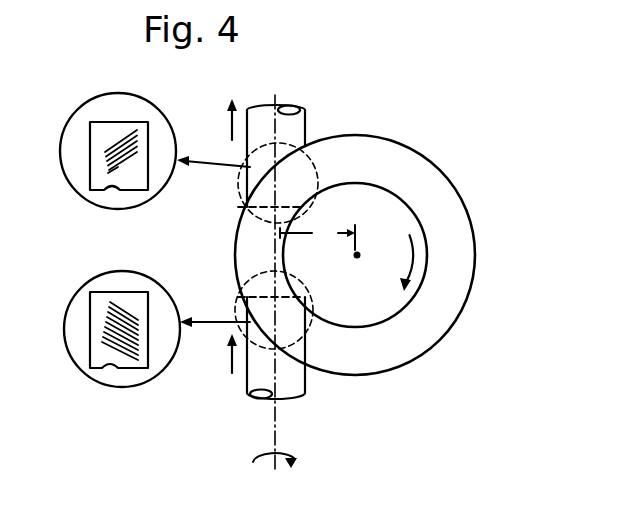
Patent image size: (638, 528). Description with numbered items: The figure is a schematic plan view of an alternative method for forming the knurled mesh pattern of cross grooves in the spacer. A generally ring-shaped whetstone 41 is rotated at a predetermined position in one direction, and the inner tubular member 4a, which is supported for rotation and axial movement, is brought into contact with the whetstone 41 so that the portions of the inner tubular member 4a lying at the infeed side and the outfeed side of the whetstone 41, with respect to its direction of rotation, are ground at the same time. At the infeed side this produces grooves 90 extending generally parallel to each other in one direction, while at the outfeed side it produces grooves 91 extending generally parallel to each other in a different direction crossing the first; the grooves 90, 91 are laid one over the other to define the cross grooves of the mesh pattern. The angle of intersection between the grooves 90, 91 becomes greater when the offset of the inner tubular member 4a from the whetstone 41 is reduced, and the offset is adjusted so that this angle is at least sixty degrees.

The inner tubular member 4a is at (262, 122).
The ring-shaped whetstone 41 is at (455, 238).
The grooves at the infeed side 90 is at (127, 340).
The grooves at the outfeed side 91 is at (123, 163).